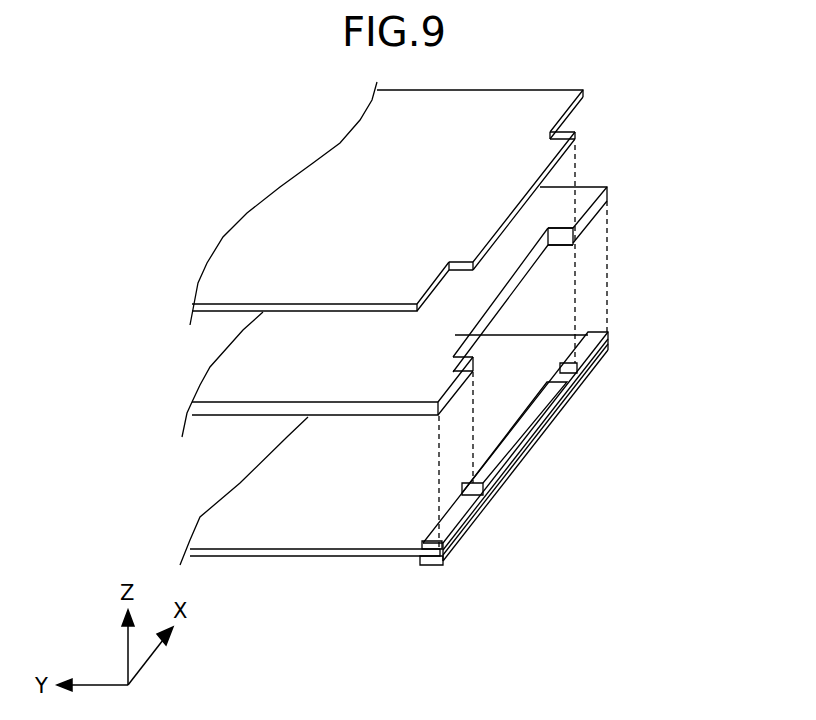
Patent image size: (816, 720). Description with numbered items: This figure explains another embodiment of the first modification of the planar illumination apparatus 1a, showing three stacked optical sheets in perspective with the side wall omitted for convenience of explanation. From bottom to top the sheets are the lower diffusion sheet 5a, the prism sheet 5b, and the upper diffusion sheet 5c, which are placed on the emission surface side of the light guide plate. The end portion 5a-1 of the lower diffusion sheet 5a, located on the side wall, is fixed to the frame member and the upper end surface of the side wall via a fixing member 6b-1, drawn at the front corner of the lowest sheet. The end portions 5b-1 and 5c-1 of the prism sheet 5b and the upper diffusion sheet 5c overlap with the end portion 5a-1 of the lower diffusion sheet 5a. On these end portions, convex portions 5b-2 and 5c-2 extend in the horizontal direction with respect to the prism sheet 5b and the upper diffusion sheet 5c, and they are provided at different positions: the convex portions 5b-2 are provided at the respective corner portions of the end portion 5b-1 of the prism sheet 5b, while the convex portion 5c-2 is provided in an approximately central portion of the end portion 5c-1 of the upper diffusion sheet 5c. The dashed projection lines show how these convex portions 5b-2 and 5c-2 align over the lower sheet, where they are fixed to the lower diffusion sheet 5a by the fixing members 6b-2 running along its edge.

The planar illumination apparatus 1a is at (694, 119).
The lower diffusion sheet 5a is at (235, 523).
The prism sheet 5b is at (235, 379).
The upper diffusion sheet 5c is at (235, 278).
The end portion of the lower diffusion sheet 5a-1 is at (483, 502).
The end portion of the prism sheet 5b-1 is at (530, 205).
The convex portions of the prism sheet 5b-2 is at (447, 380).
The end portion of the upper diffusion sheet 5c-1 is at (550, 113).
The convex portion of the upper diffusion sheet 5c-2 is at (548, 152).
The fixing member 6b-1 is at (428, 565).
The fixing members 6b-2 is at (537, 412).